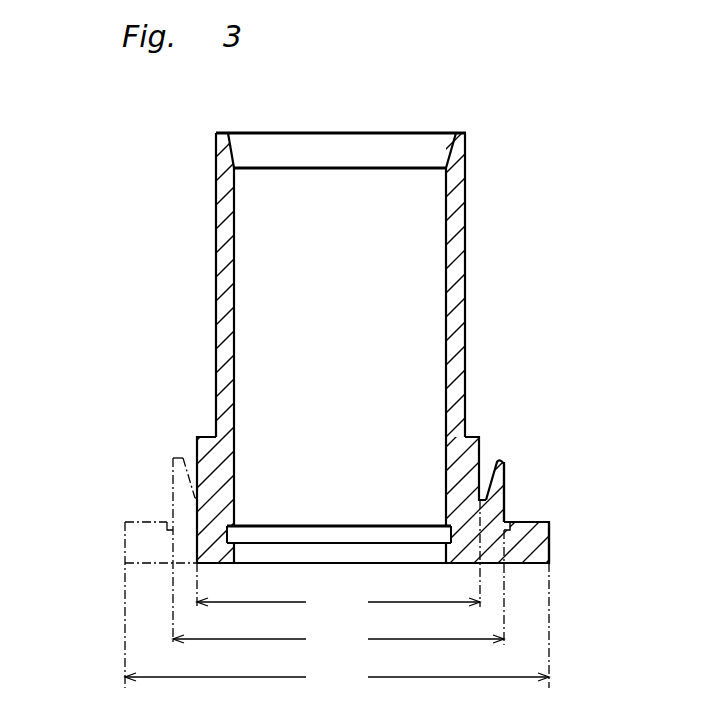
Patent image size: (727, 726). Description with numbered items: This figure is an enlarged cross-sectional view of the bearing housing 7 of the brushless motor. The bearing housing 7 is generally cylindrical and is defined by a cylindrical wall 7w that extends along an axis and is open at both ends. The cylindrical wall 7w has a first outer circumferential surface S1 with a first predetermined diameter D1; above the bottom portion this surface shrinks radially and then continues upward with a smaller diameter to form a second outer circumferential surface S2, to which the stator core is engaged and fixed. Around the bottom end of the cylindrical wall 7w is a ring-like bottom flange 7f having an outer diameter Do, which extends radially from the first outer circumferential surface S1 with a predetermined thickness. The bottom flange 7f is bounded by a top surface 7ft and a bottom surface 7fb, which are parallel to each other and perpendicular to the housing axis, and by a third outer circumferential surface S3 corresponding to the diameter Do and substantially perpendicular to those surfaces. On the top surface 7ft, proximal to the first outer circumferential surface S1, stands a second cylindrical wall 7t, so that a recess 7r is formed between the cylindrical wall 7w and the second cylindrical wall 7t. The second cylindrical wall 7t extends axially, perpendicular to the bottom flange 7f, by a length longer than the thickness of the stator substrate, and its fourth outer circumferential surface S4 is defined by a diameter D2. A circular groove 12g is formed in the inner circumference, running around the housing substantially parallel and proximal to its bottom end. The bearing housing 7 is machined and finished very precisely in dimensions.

The bearing housing 7 is at (527, 146).
The second outer circumferential surface S2 is at (466, 217).
The cylindrical wall 7w is at (199, 438).
The recess 7r is at (487, 457).
The second cylindrical wall 7t is at (505, 462).
The fourth outer circumferential surface S4 is at (505, 488).
The top surface of bottom flange 7ft is at (533, 521).
The bottom flange 7f is at (539, 545).
The third outer circumferential surface S3 is at (551, 560).
The bottom surface of bottom flange 7fb is at (532, 567).
The first outer circumferential surface S1 is at (240, 533).
The circular groove 12g is at (185, 458).
The first predetermined diameter D1 is at (338, 557).
The diameter of fourth outer circumferential surface D2 is at (338, 592).
The outer diameter of bottom flange Do is at (337, 627).